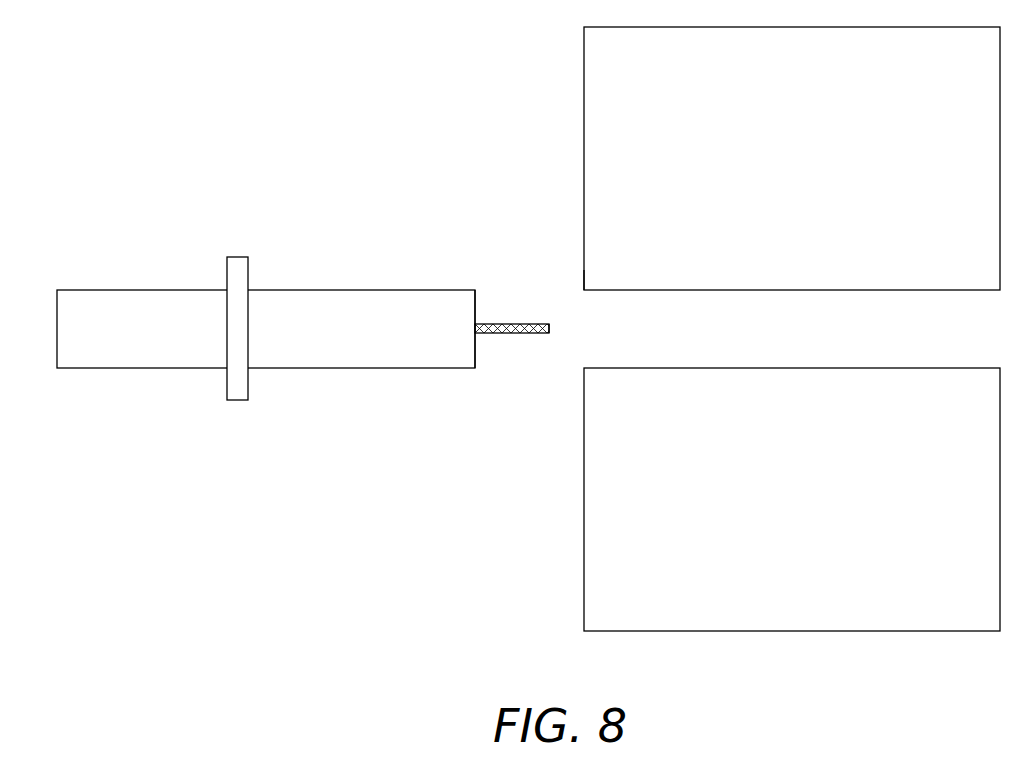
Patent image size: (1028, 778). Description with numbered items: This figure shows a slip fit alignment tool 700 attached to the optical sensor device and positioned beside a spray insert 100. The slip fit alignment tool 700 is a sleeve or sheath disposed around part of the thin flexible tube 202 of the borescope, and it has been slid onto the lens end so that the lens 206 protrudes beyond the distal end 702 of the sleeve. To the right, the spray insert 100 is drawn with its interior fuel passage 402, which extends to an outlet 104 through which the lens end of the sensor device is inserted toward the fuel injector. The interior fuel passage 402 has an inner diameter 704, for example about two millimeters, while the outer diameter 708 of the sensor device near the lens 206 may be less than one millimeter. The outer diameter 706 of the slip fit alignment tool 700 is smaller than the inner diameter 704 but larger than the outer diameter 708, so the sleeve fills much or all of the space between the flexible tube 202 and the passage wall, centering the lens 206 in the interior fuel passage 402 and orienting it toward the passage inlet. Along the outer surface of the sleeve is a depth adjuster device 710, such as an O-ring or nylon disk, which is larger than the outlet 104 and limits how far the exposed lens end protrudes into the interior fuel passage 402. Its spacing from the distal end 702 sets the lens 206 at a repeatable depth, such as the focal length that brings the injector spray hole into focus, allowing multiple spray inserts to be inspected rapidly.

The spray insert 100 is at (791, 590).
The outlet 104 is at (578, 289).
The flexible tube 202 is at (492, 336).
The lens 206 is at (551, 334).
The interior fuel passage 402 is at (870, 344).
The slip fit alignment tool 700 is at (378, 369).
The distal end 702 is at (477, 303).
The inner diameter 704 is at (664, 290).
The outer diameter of the slip fit alignment tool 706 is at (428, 290).
The outer diameter of the sensor device 708 is at (507, 382).
The depth adjuster device 710 is at (238, 393).